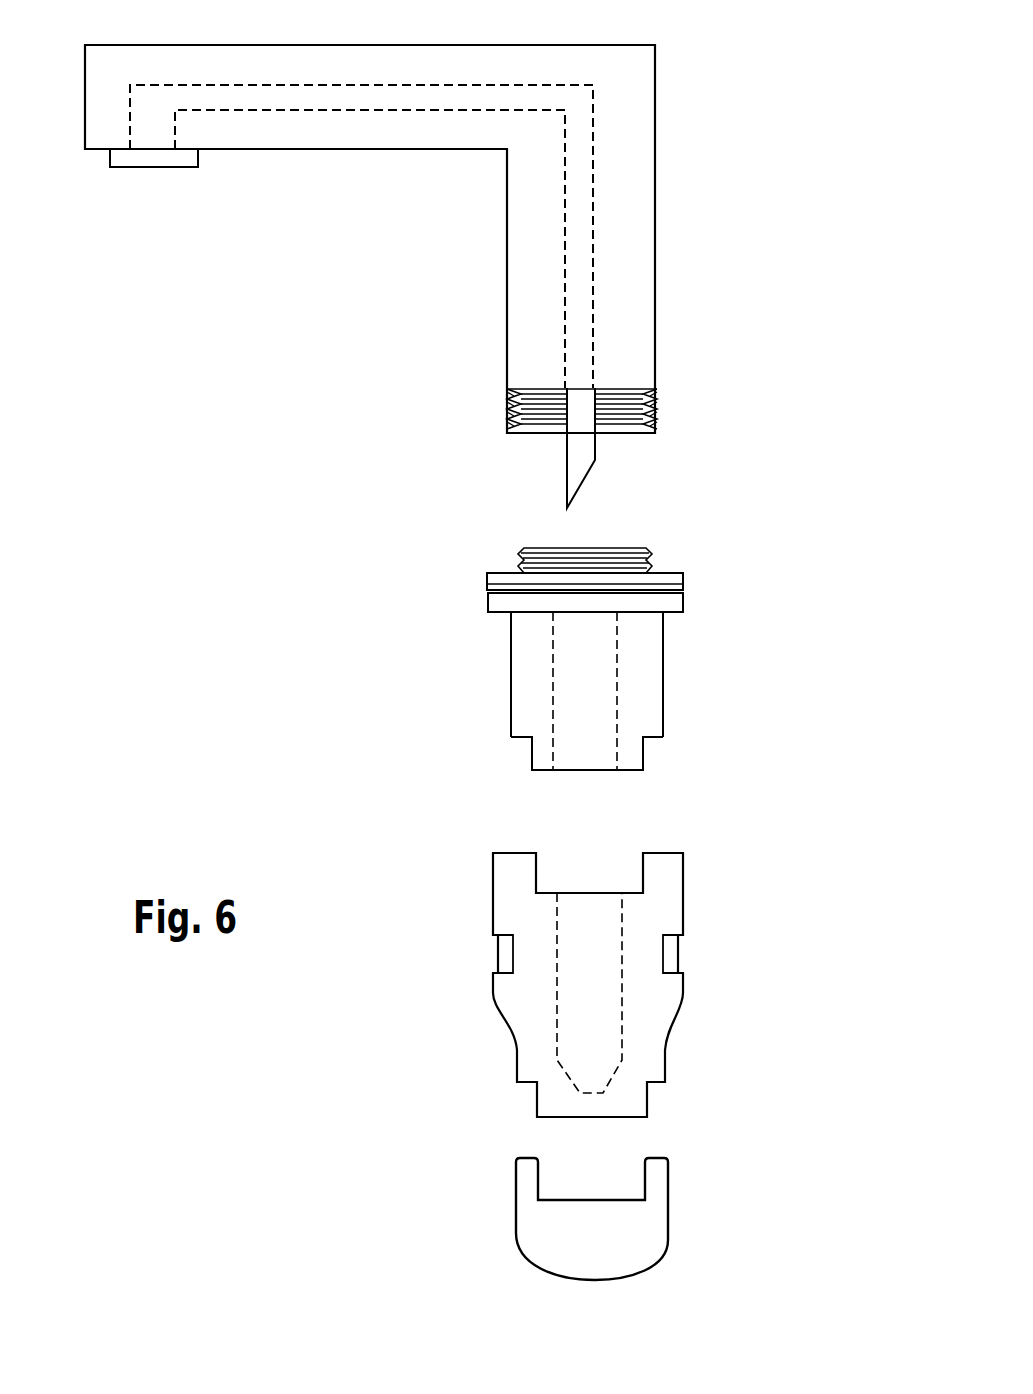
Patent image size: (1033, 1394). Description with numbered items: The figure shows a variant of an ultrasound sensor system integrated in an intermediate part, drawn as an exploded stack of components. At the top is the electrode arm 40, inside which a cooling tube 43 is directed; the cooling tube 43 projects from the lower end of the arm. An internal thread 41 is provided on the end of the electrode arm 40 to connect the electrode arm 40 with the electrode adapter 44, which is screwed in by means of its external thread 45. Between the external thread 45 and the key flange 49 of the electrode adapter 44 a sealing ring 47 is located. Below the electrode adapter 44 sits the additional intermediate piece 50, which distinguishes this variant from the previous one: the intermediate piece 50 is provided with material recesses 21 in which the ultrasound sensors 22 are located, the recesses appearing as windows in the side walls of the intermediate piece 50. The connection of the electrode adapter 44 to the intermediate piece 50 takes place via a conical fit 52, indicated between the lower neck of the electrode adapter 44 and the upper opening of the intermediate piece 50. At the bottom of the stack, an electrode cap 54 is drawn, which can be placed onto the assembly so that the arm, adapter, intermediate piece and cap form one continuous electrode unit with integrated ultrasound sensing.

The electrode arm 40 is at (643, 120).
The internal thread 41 is at (657, 392).
The cooling tube 43 is at (583, 447).
The electrode adapter 44 is at (418, 668).
The external thread 45 is at (650, 562).
The sealing ring 47 is at (673, 580).
The key flange 49 is at (673, 602).
The intermediate piece 50 is at (430, 989).
The conical fit 52 is at (630, 870).
The material recesses 21 is at (675, 955).
The ultrasound sensors 22 is at (503, 954).
The electrode cap 54 is at (458, 1210).